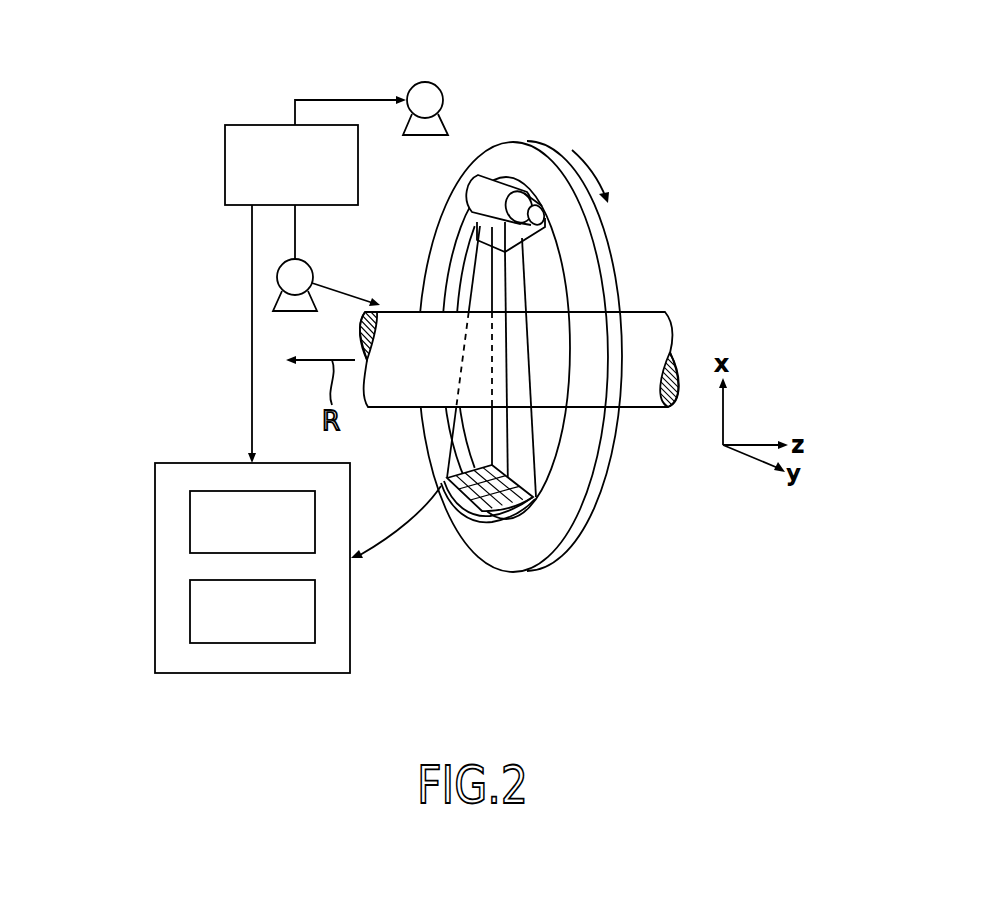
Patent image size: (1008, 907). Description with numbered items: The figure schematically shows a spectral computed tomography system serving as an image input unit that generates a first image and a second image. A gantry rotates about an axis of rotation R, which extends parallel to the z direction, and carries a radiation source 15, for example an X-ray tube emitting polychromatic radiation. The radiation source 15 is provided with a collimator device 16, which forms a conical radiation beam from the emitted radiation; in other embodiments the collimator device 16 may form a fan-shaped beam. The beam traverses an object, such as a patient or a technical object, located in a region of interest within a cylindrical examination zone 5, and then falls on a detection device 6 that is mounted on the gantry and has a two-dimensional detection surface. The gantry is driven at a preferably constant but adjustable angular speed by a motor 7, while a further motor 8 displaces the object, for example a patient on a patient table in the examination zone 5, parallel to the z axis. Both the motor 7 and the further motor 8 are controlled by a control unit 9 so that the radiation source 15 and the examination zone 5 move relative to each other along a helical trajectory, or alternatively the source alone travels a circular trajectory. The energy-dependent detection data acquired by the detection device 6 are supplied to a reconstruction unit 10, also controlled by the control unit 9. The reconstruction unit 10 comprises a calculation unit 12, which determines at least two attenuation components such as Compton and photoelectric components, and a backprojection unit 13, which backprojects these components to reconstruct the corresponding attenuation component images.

The cylindrical examination zone 5 is at (398, 312).
The detection device 6 is at (478, 520).
The motor 7 is at (436, 83).
The further motor 8 is at (311, 268).
The control unit 9 is at (241, 125).
The reconstruction unit 10 is at (351, 658).
The calculation unit 12 is at (190, 522).
The backprojection unit 13 is at (190, 612).
The radiation source 15 is at (492, 187).
The collimator device 16 is at (518, 240).